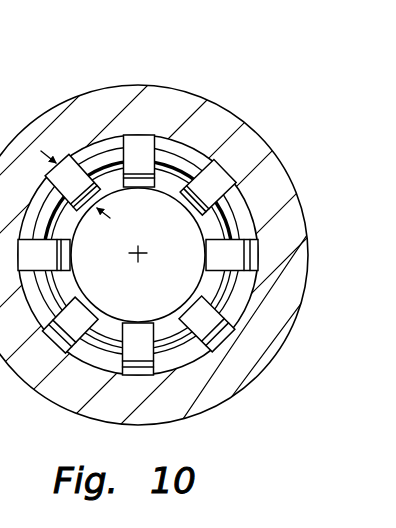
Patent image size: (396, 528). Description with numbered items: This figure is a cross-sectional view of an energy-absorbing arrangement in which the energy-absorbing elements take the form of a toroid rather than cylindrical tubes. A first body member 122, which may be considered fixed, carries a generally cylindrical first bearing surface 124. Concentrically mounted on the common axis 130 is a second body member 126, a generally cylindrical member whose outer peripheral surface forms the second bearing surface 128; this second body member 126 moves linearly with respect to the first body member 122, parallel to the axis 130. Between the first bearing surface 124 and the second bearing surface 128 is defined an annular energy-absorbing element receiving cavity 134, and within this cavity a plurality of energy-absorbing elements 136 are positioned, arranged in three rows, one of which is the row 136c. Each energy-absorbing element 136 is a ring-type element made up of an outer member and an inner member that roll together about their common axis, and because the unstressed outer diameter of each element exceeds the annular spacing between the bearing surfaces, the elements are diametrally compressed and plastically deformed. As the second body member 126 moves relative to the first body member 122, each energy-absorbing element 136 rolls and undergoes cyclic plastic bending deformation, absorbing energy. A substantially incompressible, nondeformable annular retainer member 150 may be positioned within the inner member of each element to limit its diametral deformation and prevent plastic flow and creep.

The first body member 122 is at (220, 108).
The first bearing surface 124 is at (83, 153).
The second body member 126 is at (173, 298).
The second bearing surface 128 is at (115, 178).
The axis 130 is at (143, 249).
The annular energy-absorbing element receiving cavity 134 is at (188, 152).
The energy-absorbing element 136 is at (146, 133).
The energy-absorbing element row 136c is at (331, 131).
The annular retainer member 150 is at (237, 293).